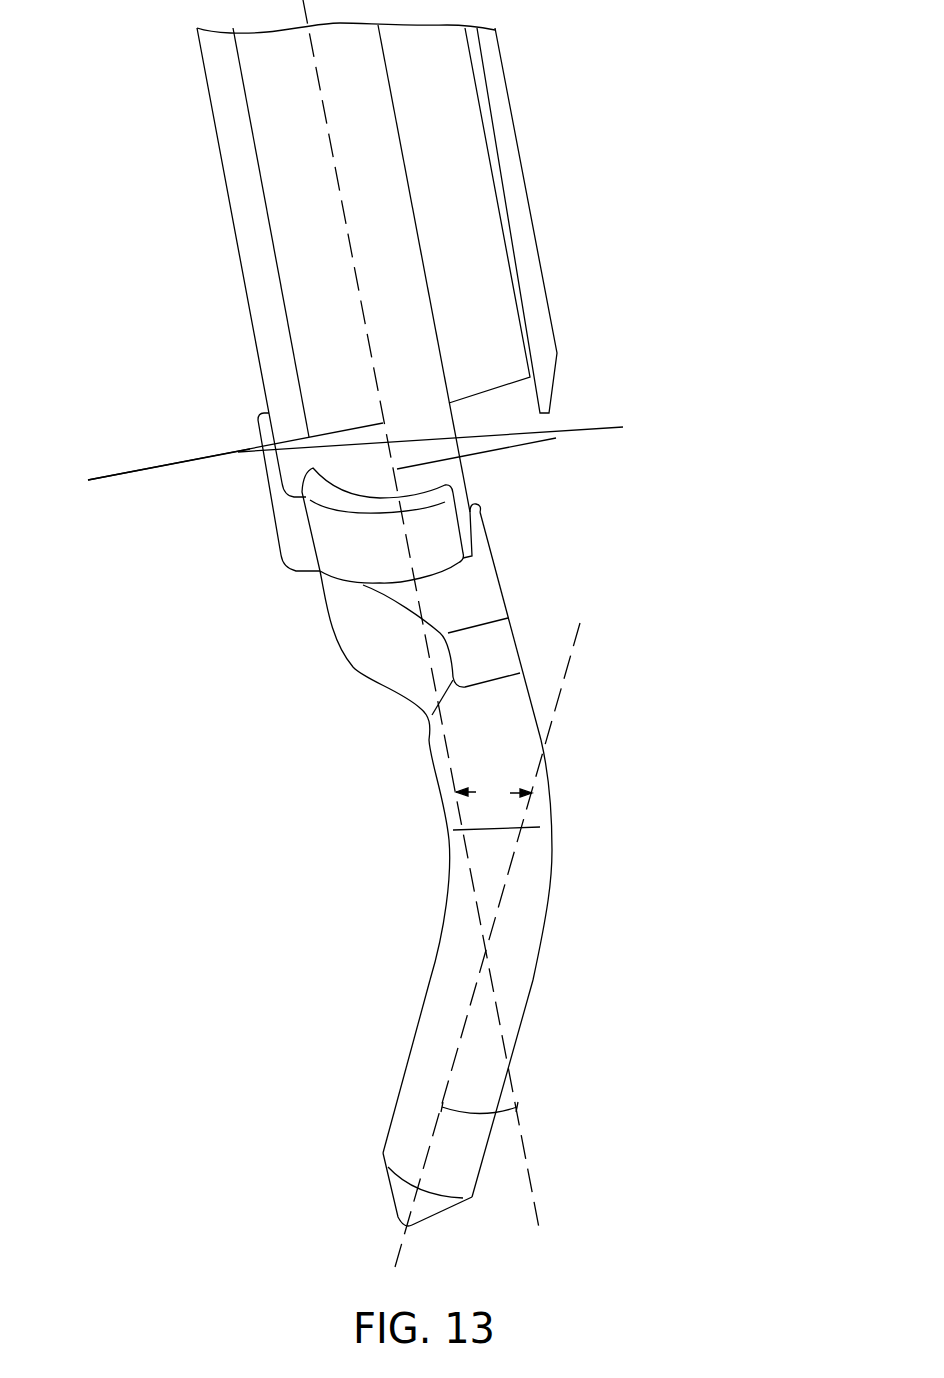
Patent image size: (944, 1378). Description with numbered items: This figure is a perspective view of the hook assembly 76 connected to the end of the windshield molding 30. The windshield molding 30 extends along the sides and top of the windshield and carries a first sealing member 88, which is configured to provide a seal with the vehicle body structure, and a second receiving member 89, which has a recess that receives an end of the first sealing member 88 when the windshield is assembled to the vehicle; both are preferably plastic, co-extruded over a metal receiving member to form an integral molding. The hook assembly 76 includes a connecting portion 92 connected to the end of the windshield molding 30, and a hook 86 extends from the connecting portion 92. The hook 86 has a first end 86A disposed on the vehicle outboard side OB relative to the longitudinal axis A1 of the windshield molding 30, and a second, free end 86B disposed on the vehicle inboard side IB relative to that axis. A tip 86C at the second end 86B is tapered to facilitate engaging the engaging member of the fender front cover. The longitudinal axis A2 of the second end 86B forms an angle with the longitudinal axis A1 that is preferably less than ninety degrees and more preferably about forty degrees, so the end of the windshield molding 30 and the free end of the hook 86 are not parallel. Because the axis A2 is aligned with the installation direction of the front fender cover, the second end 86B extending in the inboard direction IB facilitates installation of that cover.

The windshield molding 30 is at (512, 100).
The first sealing member 88 is at (547, 297).
The second receiving member 89 is at (423, 255).
The connecting portion 92 is at (308, 530).
The hook assembly 76 is at (438, 792).
The hook 86 is at (432, 978).
The first end 86A is at (530, 693).
The second end 86B is at (400, 1223).
The tip 86C is at (440, 1217).
The longitudinal axis A1 is at (336, 172).
The longitudinal axis A2 is at (455, 1054).
The vehicle inboard side IB is at (154, 472).
The vehicle outboard side OB is at (451, 433).